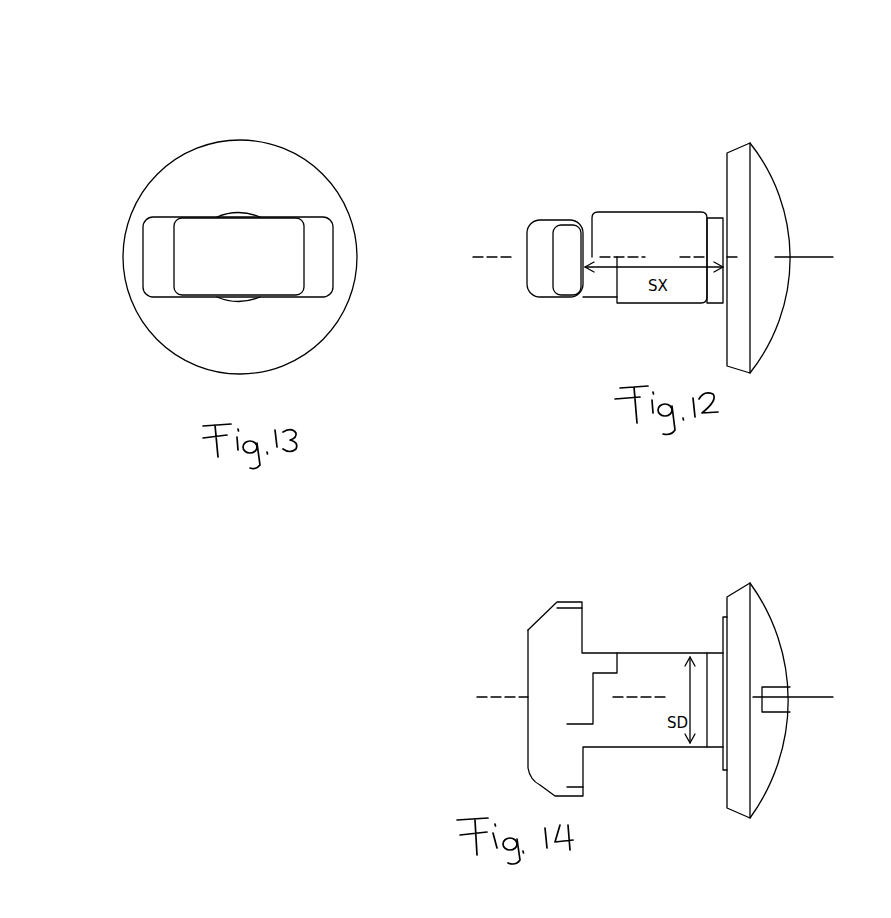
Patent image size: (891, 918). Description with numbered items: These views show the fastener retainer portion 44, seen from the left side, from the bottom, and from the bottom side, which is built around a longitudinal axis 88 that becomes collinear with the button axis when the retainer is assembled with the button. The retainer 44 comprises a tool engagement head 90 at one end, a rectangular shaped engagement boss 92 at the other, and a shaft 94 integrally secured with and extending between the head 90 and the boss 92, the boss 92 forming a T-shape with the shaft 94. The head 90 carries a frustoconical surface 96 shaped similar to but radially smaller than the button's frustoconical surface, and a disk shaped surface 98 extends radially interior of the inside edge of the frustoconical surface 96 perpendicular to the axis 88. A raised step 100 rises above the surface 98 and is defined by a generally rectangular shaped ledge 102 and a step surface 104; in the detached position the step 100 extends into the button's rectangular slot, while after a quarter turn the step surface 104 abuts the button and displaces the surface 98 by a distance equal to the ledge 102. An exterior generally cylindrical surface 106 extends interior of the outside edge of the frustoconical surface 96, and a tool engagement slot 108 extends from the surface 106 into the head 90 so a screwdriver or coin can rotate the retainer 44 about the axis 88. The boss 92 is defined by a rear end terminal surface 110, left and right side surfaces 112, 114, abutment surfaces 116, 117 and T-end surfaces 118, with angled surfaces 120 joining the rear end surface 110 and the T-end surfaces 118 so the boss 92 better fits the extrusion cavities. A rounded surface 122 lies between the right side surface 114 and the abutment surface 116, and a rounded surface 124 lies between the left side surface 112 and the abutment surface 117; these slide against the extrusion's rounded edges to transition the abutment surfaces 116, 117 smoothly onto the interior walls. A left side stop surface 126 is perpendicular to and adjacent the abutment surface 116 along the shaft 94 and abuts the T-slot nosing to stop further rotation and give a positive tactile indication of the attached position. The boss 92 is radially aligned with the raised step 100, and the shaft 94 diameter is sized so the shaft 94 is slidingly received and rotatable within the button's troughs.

In FIG. 13, the fastener retainer portion 44 is at (325, 369).
In FIG. 12, the fastener retainer portion 44 is at (731, 106).
In FIG. 14, the fastener retainer portion 44 is at (804, 799).
In FIG. 12, the longitudinal axis 88 is at (812, 257).
In FIG. 14, the longitudinal axis 88 is at (815, 695).
In FIG. 13, the tool engagement head 90 is at (340, 192).
In FIG. 12, the tool engagement head 90 is at (761, 154).
In FIG. 14, the tool engagement head 90 is at (759, 619).
In FIG. 13, the rectangular shaped engagement boss 92 is at (186, 290).
In FIG. 12, the rectangular shaped engagement boss 92 is at (539, 292).
In FIG. 14, the rectangular shaped engagement boss 92 is at (532, 642).
In FIG. 13, the shaft 94 is at (234, 210).
In FIG. 12, the shaft 94 is at (657, 218).
In FIG. 14, the shaft 94 is at (650, 739).
In FIG. 12, the frustoconical surface 96 is at (728, 170).
In FIG. 13, the disk shaped surface 98 is at (278, 183).
In FIG. 12, the disk shaped surface 98 is at (723, 187).
In FIG. 14, the disk shaped surface 98 is at (717, 607).
In FIG. 12, the raised step 100 is at (718, 285).
In FIG. 14, the raised step 100 is at (722, 649).
In FIG. 14, the ledge 102 is at (719, 596).
In FIG. 14, the step surface 104 is at (717, 627).
In FIG. 12, the exterior generally cylindrical surface 106 is at (764, 324).
In FIG. 14, the tool engagement slot 108 is at (787, 703).
In FIG. 13, the rear end terminal surface 110 is at (255, 270).
In FIG. 12, the rear end terminal surface 110 is at (542, 258).
In FIG. 14, the rear end terminal surface 110 is at (527, 729).
In FIG. 12, the left side surface 112 is at (557, 299).
In FIG. 14, the left side surface 112 is at (549, 708).
In FIG. 12, the right side surface 114 is at (554, 212).
In FIG. 12, the abutment surface 116 is at (589, 246).
In FIG. 14, the abutment surface 116 is at (572, 600).
In FIG. 14, the abutment surface 117 is at (587, 773).
In FIG. 12, the T-end surfaces 118 is at (571, 240).
In FIG. 14, the T-end surfaces 118 is at (570, 600).
In FIG. 13, the angled surfaces 120 is at (325, 252).
In FIG. 14, the angled surfaces 120 is at (536, 606).
In FIG. 12, the rounded surface 122 is at (583, 218).
In FIG. 14, the rounded surface 124 is at (578, 766).
In FIG. 12, the left side stop surface 126 is at (605, 282).
In FIG. 14, the left side stop surface 126 is at (588, 609).